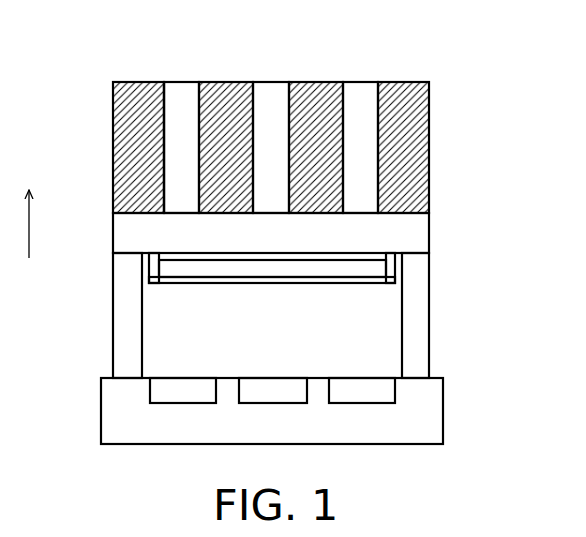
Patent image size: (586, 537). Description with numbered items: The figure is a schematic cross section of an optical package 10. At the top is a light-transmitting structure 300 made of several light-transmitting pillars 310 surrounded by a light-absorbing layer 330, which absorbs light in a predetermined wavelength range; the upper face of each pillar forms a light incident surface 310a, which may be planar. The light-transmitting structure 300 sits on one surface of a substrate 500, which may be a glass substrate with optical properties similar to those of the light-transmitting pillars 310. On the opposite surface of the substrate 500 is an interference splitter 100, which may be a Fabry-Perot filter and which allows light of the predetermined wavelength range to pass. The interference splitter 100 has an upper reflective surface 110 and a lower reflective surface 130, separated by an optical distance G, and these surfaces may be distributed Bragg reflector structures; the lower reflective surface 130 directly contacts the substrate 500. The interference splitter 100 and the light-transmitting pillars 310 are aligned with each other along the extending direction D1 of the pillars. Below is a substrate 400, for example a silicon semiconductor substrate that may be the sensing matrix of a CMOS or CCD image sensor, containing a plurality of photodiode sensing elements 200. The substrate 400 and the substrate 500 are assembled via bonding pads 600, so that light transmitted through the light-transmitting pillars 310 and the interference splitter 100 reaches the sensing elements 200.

The optical package 10 is at (84, 27).
The interference splitter 100 is at (270, 285).
The upper reflective surface 110 is at (150, 284).
The lower reflective surface 130 is at (147, 258).
The optical distance G is at (147, 268).
The sensing element 200 is at (185, 403).
The light-transmitting structure 300 is at (314, 112).
The light-transmitting pillar 310 is at (187, 92).
The light incident surface 310a is at (167, 80).
The light-absorbing layer 330 is at (429, 112).
The substrate 400 is at (108, 413).
The substrate 500 is at (429, 230).
The bonding pad 600 is at (429, 289).
The extending direction D1 is at (14, 224).